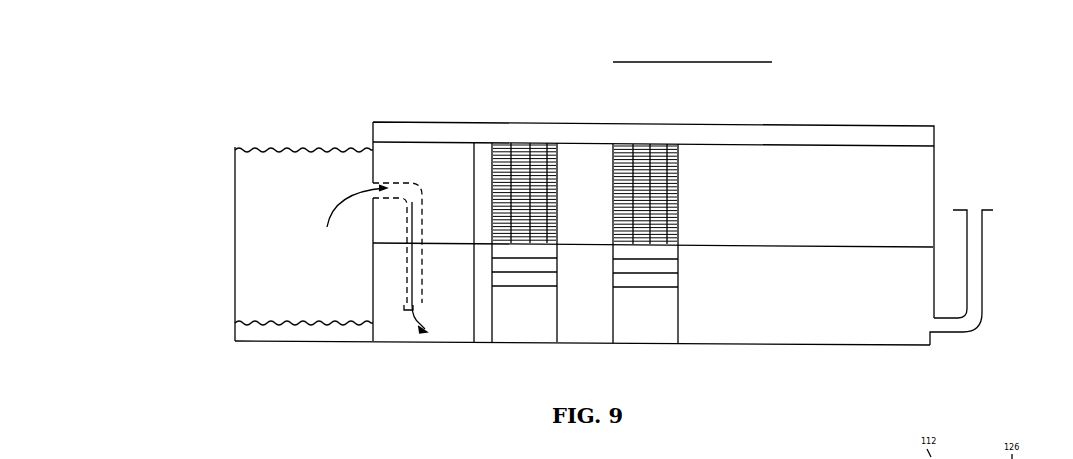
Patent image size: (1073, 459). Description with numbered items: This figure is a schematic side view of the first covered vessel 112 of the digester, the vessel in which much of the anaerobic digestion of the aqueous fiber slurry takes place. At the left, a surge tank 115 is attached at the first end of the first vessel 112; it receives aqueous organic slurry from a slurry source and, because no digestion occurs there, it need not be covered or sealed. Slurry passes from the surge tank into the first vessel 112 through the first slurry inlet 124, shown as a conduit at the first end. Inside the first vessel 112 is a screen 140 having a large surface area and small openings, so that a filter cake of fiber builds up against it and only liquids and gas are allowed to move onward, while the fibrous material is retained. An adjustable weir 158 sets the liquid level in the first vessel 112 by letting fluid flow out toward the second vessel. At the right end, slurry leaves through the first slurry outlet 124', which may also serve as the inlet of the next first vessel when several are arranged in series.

The first covered vessel 112 is at (575, 108).
The surge tank 115 is at (235, 243).
The first slurry inlet 124 is at (417, 258).
The first slurry outlet 124' is at (994, 277).
The screen 140 is at (525, 175).
The adjustable weir 158 is at (670, 282).